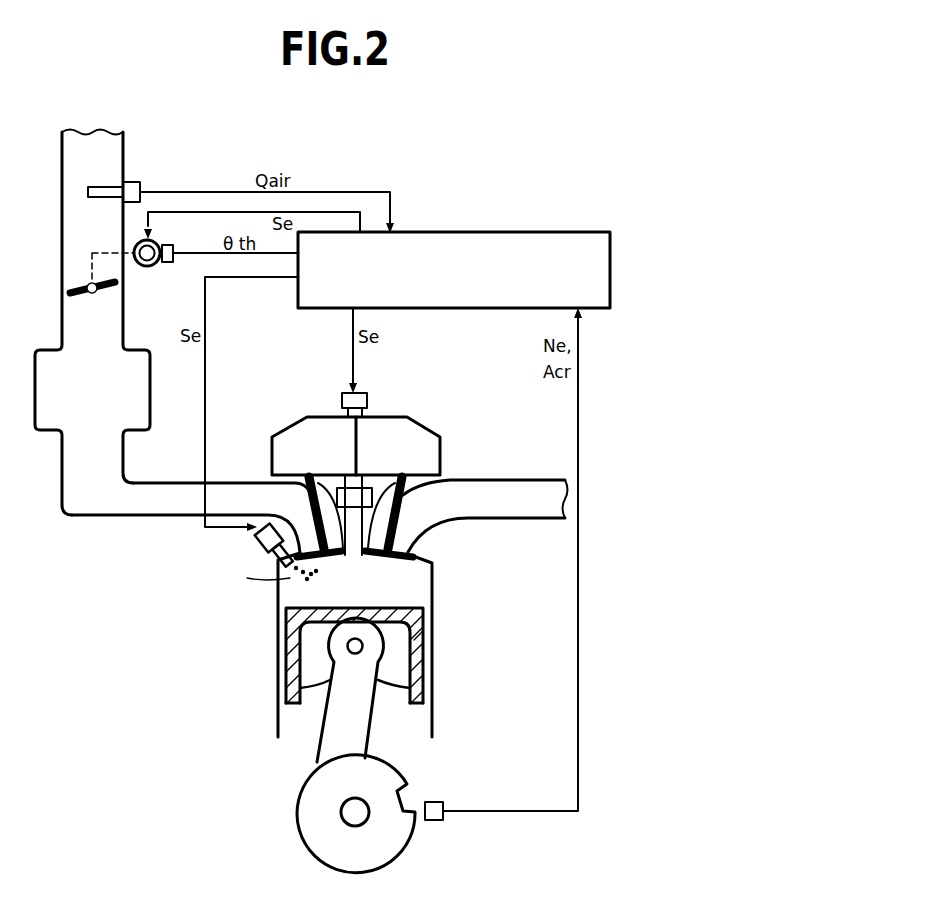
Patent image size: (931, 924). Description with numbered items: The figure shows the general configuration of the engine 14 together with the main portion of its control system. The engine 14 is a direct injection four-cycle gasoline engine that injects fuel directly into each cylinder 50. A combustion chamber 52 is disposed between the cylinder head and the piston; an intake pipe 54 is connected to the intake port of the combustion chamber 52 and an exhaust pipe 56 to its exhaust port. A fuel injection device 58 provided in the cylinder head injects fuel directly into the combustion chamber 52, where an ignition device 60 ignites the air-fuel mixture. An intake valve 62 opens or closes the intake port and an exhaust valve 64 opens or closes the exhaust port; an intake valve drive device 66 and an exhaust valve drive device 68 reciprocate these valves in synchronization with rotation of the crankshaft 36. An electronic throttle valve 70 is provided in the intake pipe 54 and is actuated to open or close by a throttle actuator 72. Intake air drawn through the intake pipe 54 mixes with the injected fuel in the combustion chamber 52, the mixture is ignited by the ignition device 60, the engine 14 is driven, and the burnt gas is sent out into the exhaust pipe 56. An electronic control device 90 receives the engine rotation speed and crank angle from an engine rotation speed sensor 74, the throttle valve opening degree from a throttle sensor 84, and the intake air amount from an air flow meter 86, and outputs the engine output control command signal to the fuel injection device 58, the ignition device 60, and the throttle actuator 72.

The engine 14 is at (455, 396).
The crankshaft 36 is at (355, 815).
The cylinder 50 is at (433, 637).
The combustion chamber 52 is at (415, 593).
The intake pipe 54 is at (233, 483).
The exhaust pipe 56 is at (515, 480).
The fuel injection device 58 is at (268, 546).
The ignition device 60 is at (357, 395).
The intake valve 62 is at (326, 560).
The exhaust valve 64 is at (404, 560).
The intake valve drive device 66 is at (278, 452).
The exhaust valve drive device 68 is at (448, 452).
The electronic throttle valve 70 is at (90, 285).
The throttle actuator 72 is at (153, 267).
The engine rotation speed sensor 74 is at (433, 820).
The throttle sensor 84 is at (167, 245).
The air flow meter 86 is at (133, 182).
The electronic control device 90 is at (572, 232).